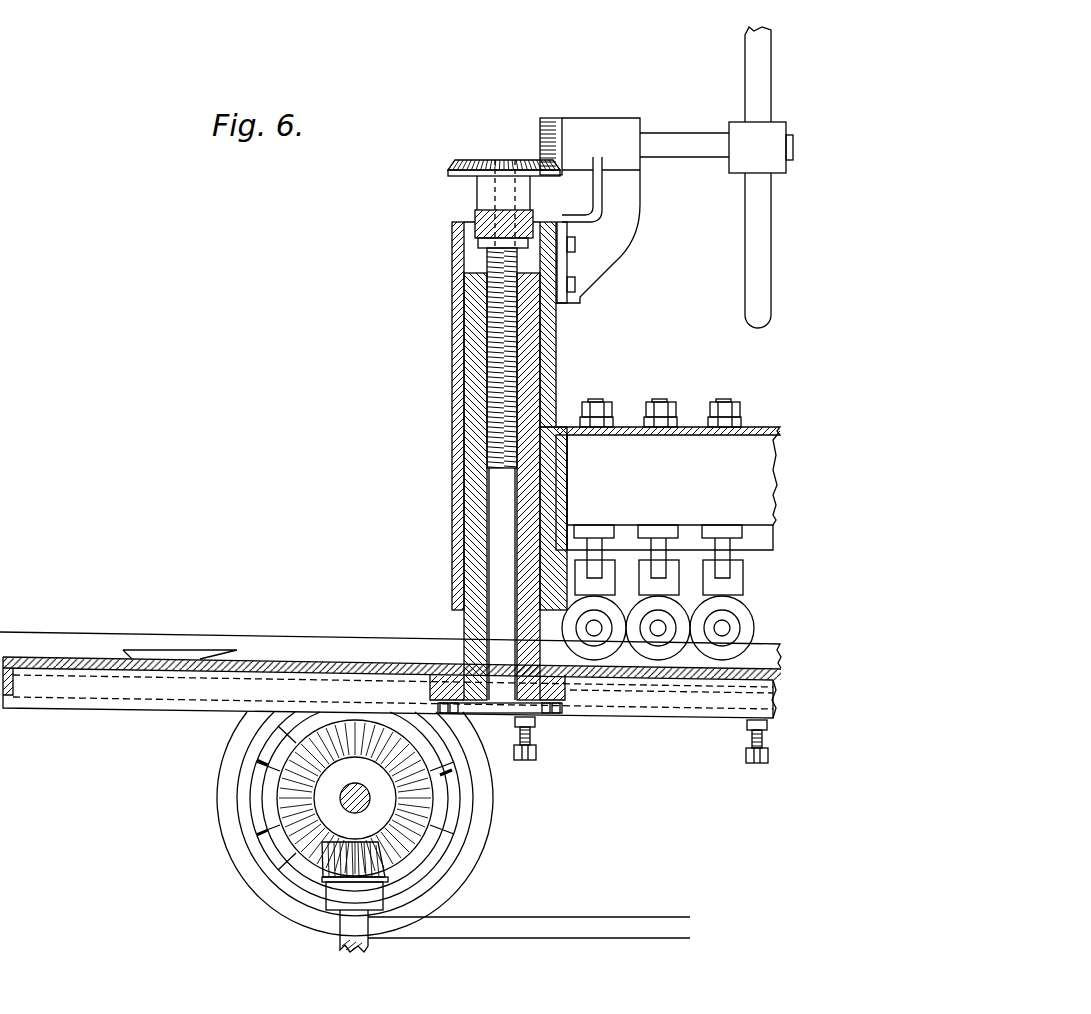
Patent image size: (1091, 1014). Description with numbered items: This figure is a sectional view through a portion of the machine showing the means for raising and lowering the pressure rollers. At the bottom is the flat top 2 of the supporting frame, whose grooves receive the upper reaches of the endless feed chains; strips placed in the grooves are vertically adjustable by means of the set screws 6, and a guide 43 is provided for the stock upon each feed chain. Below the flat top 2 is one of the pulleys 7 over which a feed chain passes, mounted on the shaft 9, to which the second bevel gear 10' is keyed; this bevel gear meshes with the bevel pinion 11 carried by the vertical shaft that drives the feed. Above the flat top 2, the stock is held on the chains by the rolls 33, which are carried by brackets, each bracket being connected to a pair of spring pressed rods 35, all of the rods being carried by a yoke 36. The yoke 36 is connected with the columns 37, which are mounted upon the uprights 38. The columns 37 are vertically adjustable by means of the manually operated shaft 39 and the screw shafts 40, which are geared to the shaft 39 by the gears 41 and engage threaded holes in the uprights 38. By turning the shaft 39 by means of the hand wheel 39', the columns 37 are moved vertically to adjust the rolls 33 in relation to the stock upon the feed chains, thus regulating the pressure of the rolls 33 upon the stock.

The flat top 2 is at (86, 659).
The set screw 6 is at (536, 740).
The pulley 7 is at (252, 833).
The shaft 9 is at (370, 800).
The second bevel gear 10' is at (395, 798).
The bevel pinion 11 is at (338, 860).
The roll 33 is at (740, 617).
The spring pressed rod 35 is at (652, 542).
The yoke 36 is at (668, 474).
The column 37 is at (458, 441).
The upright 38 is at (470, 623).
The manually operated shaft 39 is at (684, 161).
The hand wheel 39' is at (742, 177).
The screw shaft 40 is at (498, 158).
The gear 41 is at (554, 117).
The guide 43 is at (302, 650).